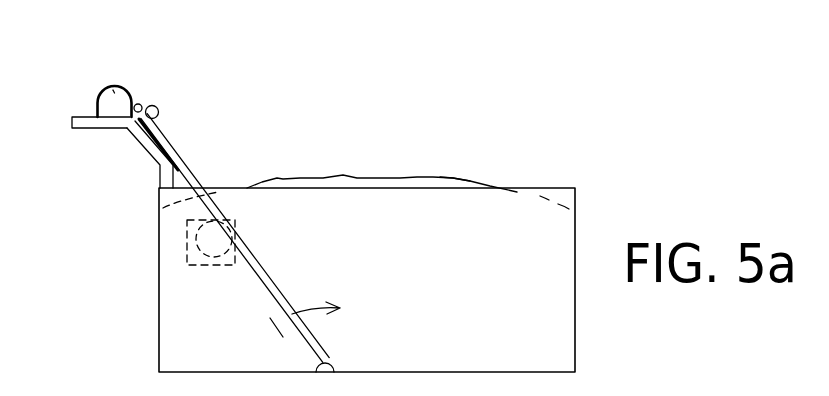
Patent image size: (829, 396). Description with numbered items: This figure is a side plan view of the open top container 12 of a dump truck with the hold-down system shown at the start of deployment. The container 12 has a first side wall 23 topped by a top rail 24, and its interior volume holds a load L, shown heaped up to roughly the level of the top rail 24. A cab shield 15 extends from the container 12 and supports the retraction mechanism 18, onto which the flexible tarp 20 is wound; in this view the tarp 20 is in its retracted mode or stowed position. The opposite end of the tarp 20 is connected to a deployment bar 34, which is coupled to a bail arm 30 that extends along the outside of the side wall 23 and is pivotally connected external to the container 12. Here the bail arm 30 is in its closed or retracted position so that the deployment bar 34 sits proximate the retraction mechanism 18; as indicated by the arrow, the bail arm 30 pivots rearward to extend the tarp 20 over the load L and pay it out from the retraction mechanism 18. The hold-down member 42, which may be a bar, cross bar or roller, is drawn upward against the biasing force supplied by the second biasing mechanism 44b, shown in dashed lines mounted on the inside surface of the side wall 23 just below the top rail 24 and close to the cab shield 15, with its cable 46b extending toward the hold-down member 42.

The open top container 12 is at (558, 188).
The top rail 24 is at (358, 180).
The load L is at (453, 178).
The first side wall 23 is at (448, 300).
The cab shield 15 is at (93, 125).
The tarp 20 is at (132, 140).
The retraction mechanism 18 is at (120, 82).
The hold-down member 42 is at (140, 103).
The deployment bar 34 is at (159, 112).
The bail arm 30 is at (275, 288).
The cable 46b is at (160, 200).
The second biasing mechanism 44b is at (190, 276).